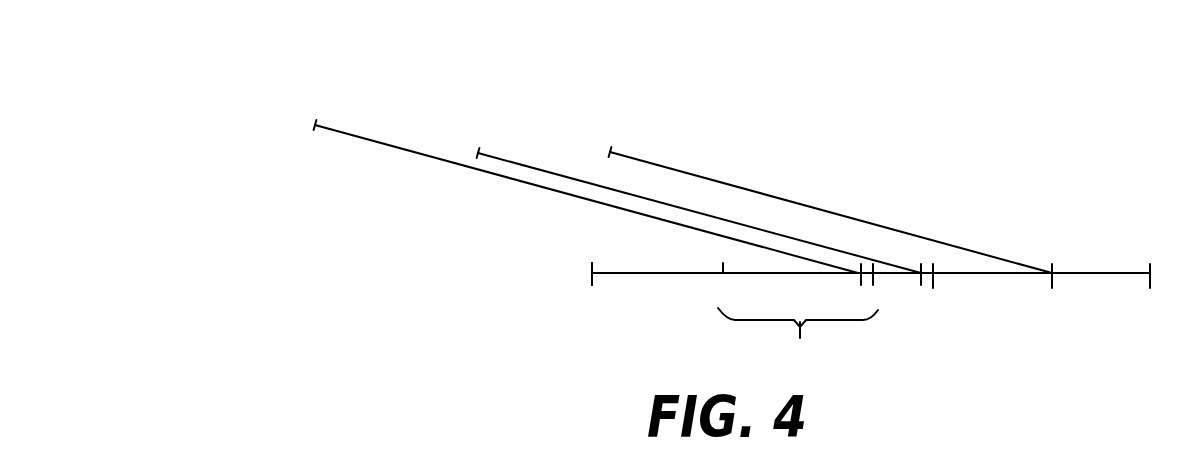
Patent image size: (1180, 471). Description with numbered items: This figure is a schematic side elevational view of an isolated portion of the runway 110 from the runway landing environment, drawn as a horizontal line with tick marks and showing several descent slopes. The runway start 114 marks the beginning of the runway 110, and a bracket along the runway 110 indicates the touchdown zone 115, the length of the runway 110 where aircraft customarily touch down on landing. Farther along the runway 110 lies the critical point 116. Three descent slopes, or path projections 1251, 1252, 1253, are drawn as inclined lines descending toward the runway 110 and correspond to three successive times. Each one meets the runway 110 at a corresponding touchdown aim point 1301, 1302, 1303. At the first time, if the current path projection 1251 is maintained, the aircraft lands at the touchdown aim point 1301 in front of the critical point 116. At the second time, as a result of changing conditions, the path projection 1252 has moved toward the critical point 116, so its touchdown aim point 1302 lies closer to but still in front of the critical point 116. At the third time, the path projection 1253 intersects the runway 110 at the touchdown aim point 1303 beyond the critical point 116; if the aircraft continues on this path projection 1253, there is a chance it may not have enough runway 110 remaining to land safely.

The runway 110 is at (929, 132).
The path projection 1251 is at (358, 137).
The path projection 1252 is at (500, 159).
The path projection 1253 is at (687, 173).
The touchdown aim point 1301 is at (866, 297).
The touchdown aim point 1302 is at (921, 273).
The touchdown aim point 1303 is at (1063, 295).
The runway start 114 is at (592, 297).
The touchdown zone 115 is at (798, 315).
The critical point 116 is at (933, 297).